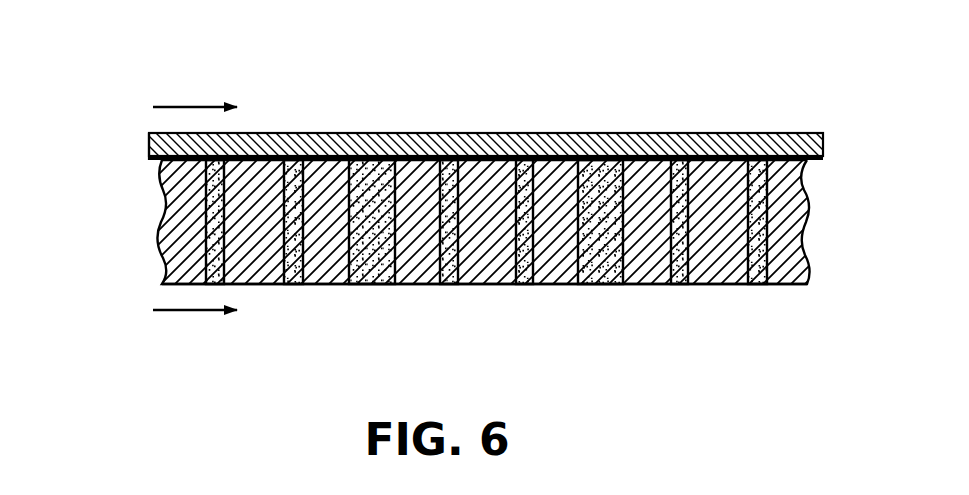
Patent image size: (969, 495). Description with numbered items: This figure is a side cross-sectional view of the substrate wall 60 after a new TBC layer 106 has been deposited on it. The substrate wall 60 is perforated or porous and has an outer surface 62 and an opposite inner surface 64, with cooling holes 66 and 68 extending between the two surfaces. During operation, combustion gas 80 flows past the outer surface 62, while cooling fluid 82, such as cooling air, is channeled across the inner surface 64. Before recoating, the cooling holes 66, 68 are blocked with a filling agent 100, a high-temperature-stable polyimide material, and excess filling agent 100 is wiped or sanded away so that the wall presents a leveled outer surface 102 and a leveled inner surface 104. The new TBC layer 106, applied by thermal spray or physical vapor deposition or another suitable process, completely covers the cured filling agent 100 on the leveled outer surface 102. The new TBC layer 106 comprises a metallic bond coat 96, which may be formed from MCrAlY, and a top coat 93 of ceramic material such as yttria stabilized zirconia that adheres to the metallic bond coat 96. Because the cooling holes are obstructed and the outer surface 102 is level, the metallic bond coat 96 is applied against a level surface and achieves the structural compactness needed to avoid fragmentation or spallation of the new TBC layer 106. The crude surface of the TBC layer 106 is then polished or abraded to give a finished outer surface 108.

The substrate wall 60 is at (667, 300).
The outer surface 62 is at (317, 157).
The inner surface 64 is at (332, 284).
The cooling hole 66 is at (443, 284).
The cooling hole 68 is at (598, 268).
The combustion gas 80 is at (197, 104).
The cooling fluid 82 is at (197, 313).
The top coat 93 is at (557, 140).
The metallic bond coat 96 is at (705, 140).
The filling agent 100 is at (365, 163).
The leveled outer surface 102 is at (611, 153).
The leveled inner surface 104 is at (478, 288).
The new TBC layer 106 is at (146, 150).
The outer surface of TBC 108 is at (782, 131).